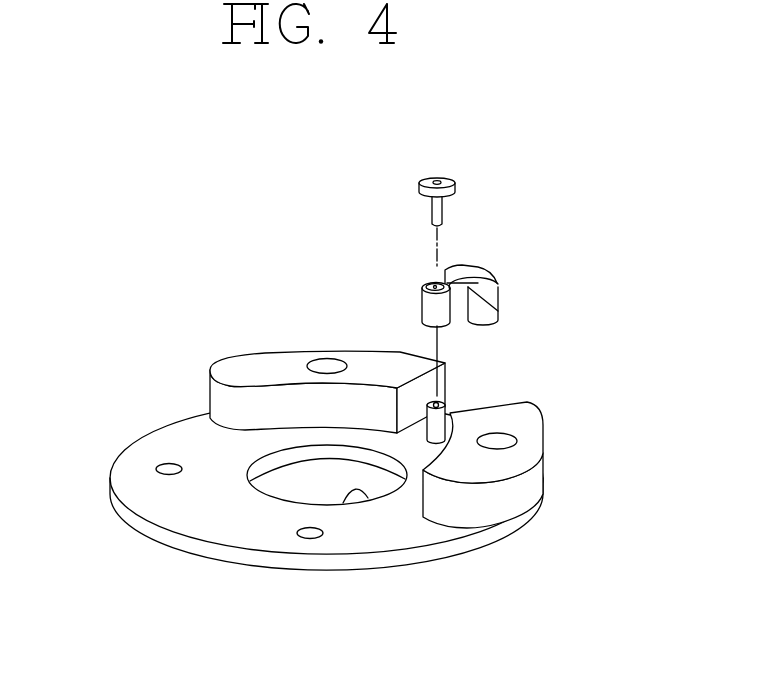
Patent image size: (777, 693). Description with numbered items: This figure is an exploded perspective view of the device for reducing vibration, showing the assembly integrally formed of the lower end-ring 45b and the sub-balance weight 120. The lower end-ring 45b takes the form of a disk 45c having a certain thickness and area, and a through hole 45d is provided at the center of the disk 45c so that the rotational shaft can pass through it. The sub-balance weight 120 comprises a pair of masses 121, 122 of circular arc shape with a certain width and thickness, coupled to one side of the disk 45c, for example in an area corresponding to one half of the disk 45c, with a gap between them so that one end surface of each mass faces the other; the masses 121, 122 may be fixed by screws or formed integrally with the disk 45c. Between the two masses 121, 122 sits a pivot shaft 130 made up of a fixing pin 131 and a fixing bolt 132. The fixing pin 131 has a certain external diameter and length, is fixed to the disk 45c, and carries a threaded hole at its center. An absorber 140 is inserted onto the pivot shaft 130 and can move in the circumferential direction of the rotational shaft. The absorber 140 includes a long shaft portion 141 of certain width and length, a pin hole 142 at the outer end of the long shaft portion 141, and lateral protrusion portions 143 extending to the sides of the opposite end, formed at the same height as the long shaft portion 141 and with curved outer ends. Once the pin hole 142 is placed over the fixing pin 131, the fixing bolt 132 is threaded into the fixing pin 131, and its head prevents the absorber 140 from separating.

The sub-balance weight 120 is at (352, 468).
The mass 121 is at (242, 368).
The mass 122 is at (493, 462).
The pivot shaft 130 is at (311, 294).
The fixing pin 131 is at (427, 406).
The fixing bolt 132 is at (420, 186).
The absorber 140 is at (499, 271).
The long shaft portion 141 is at (498, 310).
The pin hole 142 is at (433, 287).
The lateral protrusion portions 143 is at (460, 266).
The lower end-ring 45b is at (128, 533).
The disk 45c is at (137, 460).
The through hole 45d is at (367, 496).